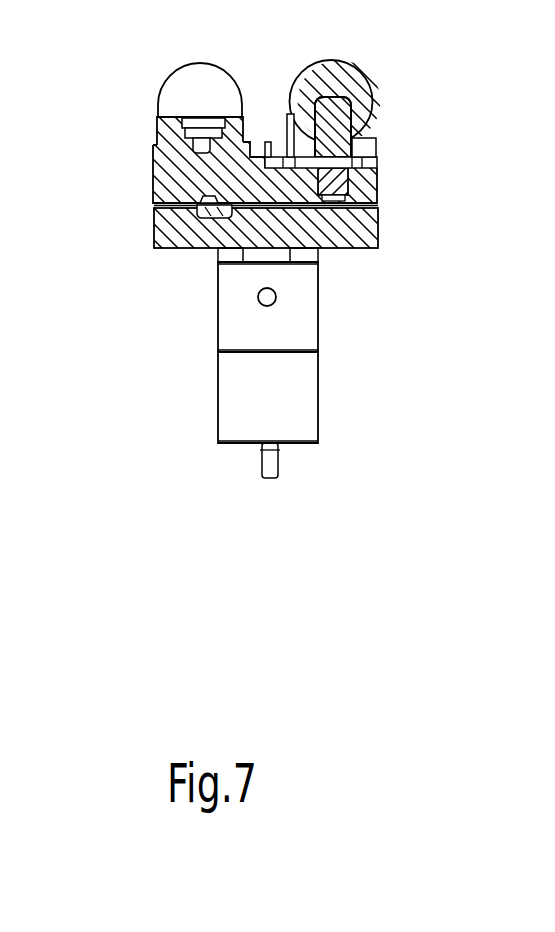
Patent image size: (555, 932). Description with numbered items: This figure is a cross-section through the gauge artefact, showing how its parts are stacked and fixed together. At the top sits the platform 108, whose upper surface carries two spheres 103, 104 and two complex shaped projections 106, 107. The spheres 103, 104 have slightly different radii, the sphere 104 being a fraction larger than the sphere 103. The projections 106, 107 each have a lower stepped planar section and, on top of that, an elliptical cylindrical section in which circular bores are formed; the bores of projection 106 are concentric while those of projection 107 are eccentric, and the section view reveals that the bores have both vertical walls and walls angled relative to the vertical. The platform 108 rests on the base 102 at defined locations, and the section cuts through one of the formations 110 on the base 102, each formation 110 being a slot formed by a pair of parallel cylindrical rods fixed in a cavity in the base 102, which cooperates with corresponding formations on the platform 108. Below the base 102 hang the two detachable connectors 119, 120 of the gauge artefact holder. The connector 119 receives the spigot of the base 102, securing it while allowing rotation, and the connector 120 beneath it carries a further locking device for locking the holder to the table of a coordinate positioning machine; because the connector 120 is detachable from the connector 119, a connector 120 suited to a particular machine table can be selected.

The base 102 is at (154, 215).
The sphere 103 is at (373, 83).
The sphere 104 is at (202, 63).
The projection 106 is at (165, 138).
The projection 107 is at (372, 130).
The platform 108 is at (153, 183).
The formation 110 is at (213, 217).
The connector 119 is at (320, 297).
The connector 120 is at (320, 378).